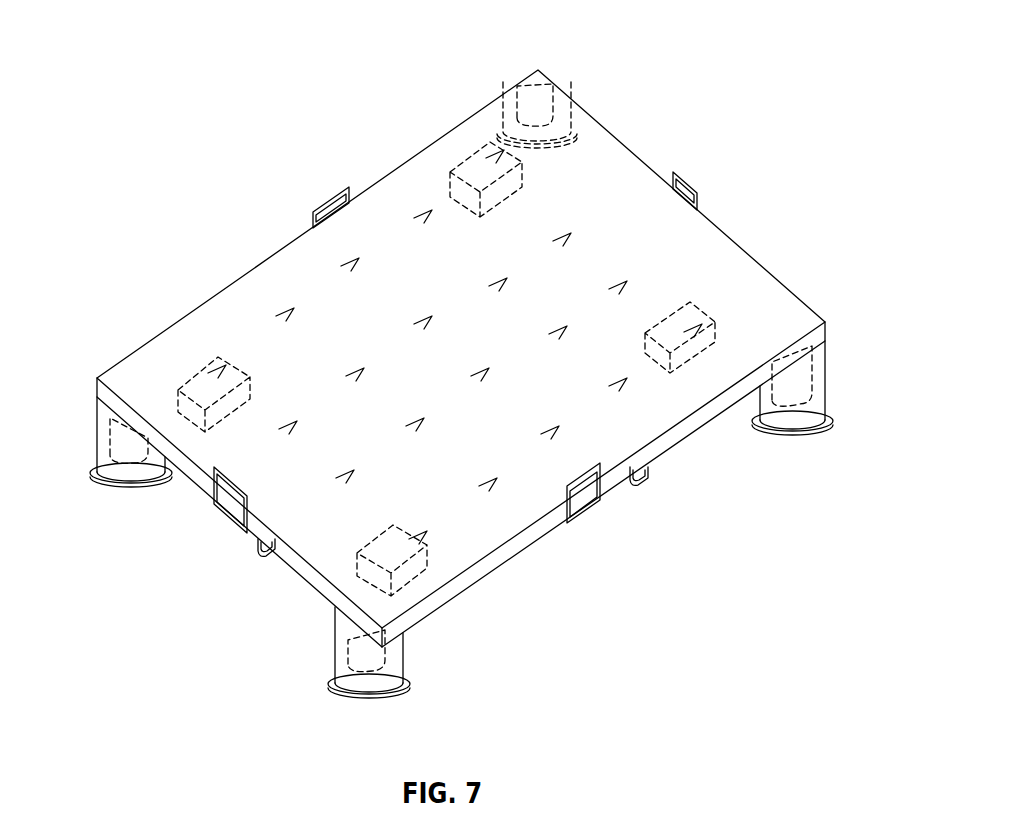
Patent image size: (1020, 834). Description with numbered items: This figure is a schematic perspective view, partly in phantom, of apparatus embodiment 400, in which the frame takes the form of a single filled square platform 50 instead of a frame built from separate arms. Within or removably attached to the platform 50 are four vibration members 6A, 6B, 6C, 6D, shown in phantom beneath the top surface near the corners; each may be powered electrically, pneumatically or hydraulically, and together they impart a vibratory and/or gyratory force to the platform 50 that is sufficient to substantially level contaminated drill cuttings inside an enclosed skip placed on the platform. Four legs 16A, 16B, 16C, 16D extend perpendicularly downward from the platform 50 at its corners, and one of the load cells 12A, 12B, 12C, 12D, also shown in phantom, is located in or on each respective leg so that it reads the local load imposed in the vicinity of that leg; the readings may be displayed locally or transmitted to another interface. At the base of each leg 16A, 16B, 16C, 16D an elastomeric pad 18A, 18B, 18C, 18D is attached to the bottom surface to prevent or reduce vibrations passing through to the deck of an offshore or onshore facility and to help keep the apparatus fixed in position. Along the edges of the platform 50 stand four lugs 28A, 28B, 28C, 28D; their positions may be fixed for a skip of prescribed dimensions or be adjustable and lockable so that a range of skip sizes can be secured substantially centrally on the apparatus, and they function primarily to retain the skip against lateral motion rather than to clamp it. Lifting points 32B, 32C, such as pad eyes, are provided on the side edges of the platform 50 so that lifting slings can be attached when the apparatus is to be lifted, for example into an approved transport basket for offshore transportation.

The embodiment 400 is at (178, 168).
The platform 50 is at (262, 272).
The vibration member 6A is at (475, 150).
The vibration member 6B is at (713, 310).
The vibration member 6C is at (430, 563).
The vibration member 6D is at (207, 358).
The load cell 12A is at (541, 67).
The load cell 12B is at (812, 366).
The load cell 12C is at (343, 665).
The load cell 12D is at (108, 428).
The leg 16A is at (583, 95).
The leg 16B is at (828, 394).
The leg 16C is at (404, 651).
The leg 16D is at (99, 452).
The elastomeric pad 18A is at (590, 127).
The elastomeric pad 18B is at (798, 435).
The elastomeric pad 18C is at (370, 700).
The elastomeric pad 18D is at (116, 490).
The lug 28A is at (700, 195).
The lug 28B is at (582, 489).
The lug 28C is at (228, 503).
The lug 28D is at (338, 189).
The lifting point 32B is at (649, 478).
The lifting point 32C is at (261, 556).